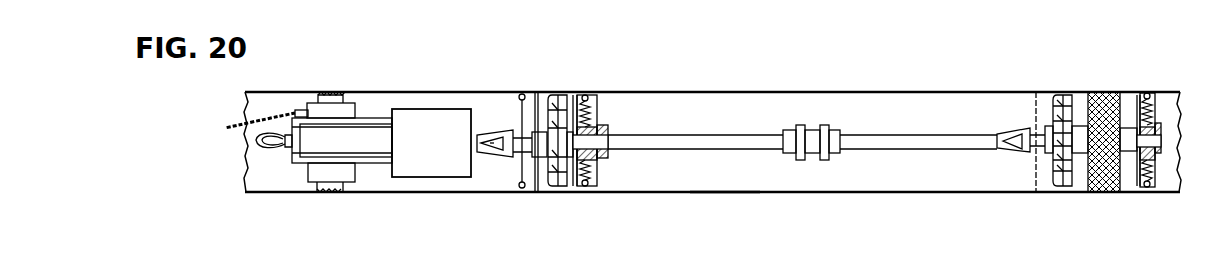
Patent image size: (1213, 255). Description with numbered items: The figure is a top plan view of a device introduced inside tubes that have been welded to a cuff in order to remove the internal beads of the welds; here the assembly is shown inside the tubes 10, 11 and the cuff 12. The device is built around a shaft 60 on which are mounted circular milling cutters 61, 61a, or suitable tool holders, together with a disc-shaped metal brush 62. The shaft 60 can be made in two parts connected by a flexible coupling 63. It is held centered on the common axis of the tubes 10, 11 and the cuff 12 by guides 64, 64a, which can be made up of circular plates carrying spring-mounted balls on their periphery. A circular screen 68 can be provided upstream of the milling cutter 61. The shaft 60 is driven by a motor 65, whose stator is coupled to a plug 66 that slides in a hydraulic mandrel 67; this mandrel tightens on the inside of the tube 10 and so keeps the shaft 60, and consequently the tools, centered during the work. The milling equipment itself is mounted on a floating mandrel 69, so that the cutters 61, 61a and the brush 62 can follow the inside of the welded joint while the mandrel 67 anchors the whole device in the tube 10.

The tube 10 is at (440, 193).
The tube 11 is at (1135, 192).
The cuff 12 is at (733, 193).
The shaft 60 is at (950, 138).
The circular milling cutter 61 is at (558, 190).
The circular milling cutter 61a is at (1062, 190).
The metal brush 62 is at (1107, 90).
The flexible coupling 63 is at (825, 127).
The guide 64 is at (593, 110).
The guide 64a is at (1157, 108).
The motor 65 is at (435, 117).
The plug 66 is at (377, 163).
The hydraulic mandrel 67 is at (337, 173).
The circular screen 68 is at (520, 110).
The floating mandrel 69 is at (508, 148).